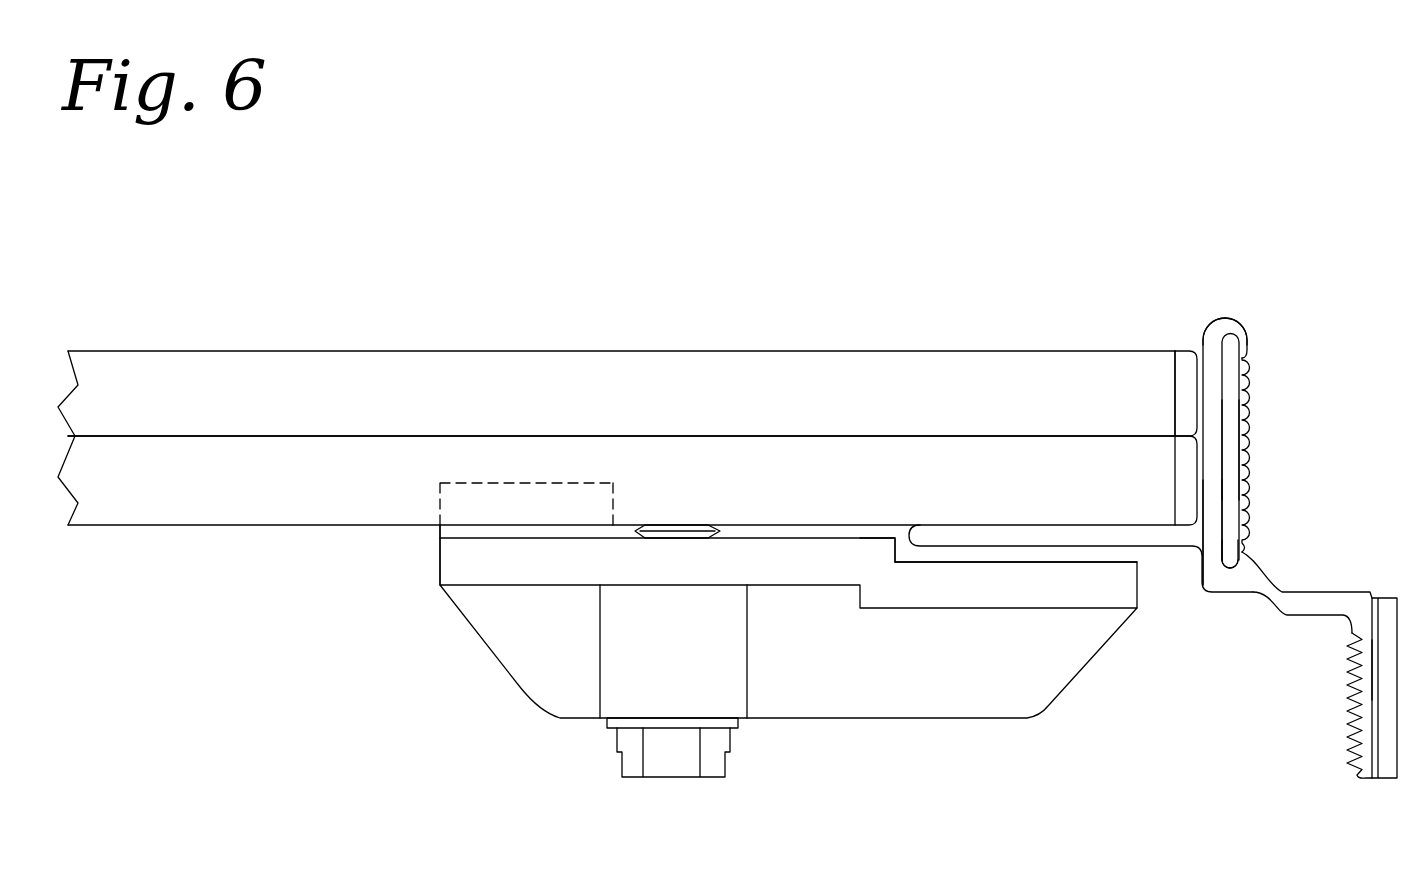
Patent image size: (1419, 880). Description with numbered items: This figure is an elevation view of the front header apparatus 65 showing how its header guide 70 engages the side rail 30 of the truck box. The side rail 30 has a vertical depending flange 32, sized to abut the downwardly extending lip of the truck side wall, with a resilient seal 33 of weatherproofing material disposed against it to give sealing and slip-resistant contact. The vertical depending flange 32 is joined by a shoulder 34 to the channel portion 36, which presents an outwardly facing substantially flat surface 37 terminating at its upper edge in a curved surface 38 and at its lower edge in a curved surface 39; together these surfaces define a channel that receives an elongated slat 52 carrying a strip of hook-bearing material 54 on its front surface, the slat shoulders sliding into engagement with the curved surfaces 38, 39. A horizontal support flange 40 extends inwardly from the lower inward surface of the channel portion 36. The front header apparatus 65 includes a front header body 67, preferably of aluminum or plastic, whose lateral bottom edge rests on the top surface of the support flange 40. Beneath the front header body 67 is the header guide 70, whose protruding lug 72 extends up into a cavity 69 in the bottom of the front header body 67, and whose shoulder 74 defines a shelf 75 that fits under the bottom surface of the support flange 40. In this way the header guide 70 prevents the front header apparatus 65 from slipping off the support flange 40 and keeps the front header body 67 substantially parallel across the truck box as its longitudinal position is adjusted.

The side rail 30 is at (1246, 703).
The vertical depending flange 32 is at (1358, 691).
The seal 33 is at (1389, 605).
The shoulder 34 is at (1280, 592).
The channel portion 36 is at (1190, 300).
The outwardly facing substantially flat surface 37 is at (1222, 475).
The curved surface 38 is at (1232, 327).
The curved surface 39 is at (1228, 565).
The horizontal support flange 40 is at (1024, 534).
The elongated slat 52 is at (1231, 470).
The hook-bearing material 54 is at (1251, 421).
The front header apparatus 65 is at (745, 314).
The front header body 67 is at (905, 402).
The cavity 69 is at (615, 483).
The header guide 70 is at (1030, 718).
The protruding lug 72 is at (441, 533).
The shoulder 74 is at (895, 545).
The shelf 75 is at (948, 565).